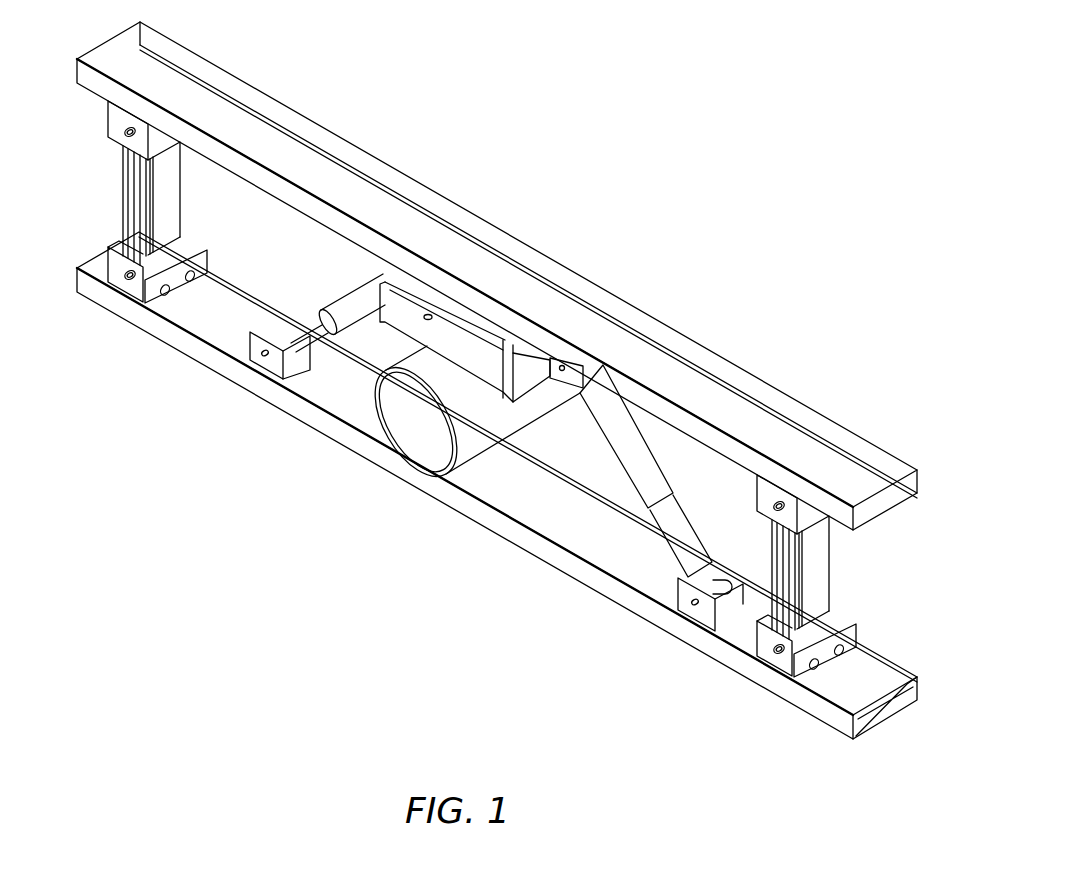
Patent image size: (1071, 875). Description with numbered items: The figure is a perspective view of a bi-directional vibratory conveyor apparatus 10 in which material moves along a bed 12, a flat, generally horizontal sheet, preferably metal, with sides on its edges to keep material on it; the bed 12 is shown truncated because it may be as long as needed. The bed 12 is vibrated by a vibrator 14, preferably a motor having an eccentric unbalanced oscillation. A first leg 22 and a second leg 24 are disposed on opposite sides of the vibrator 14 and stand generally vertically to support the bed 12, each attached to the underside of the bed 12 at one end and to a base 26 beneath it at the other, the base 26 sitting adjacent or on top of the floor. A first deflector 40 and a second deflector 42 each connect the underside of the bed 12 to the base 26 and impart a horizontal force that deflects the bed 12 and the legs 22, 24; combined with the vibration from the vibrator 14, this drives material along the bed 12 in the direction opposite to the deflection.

The bi-directional vibratory conveyor apparatus 10 is at (735, 148).
The bed 12 is at (845, 475).
The vibrator 14 is at (410, 440).
The first leg 22 is at (808, 592).
The second leg 24 is at (122, 227).
The base 26 is at (257, 390).
The first deflector 40 is at (648, 470).
The second deflector 42 is at (345, 307).